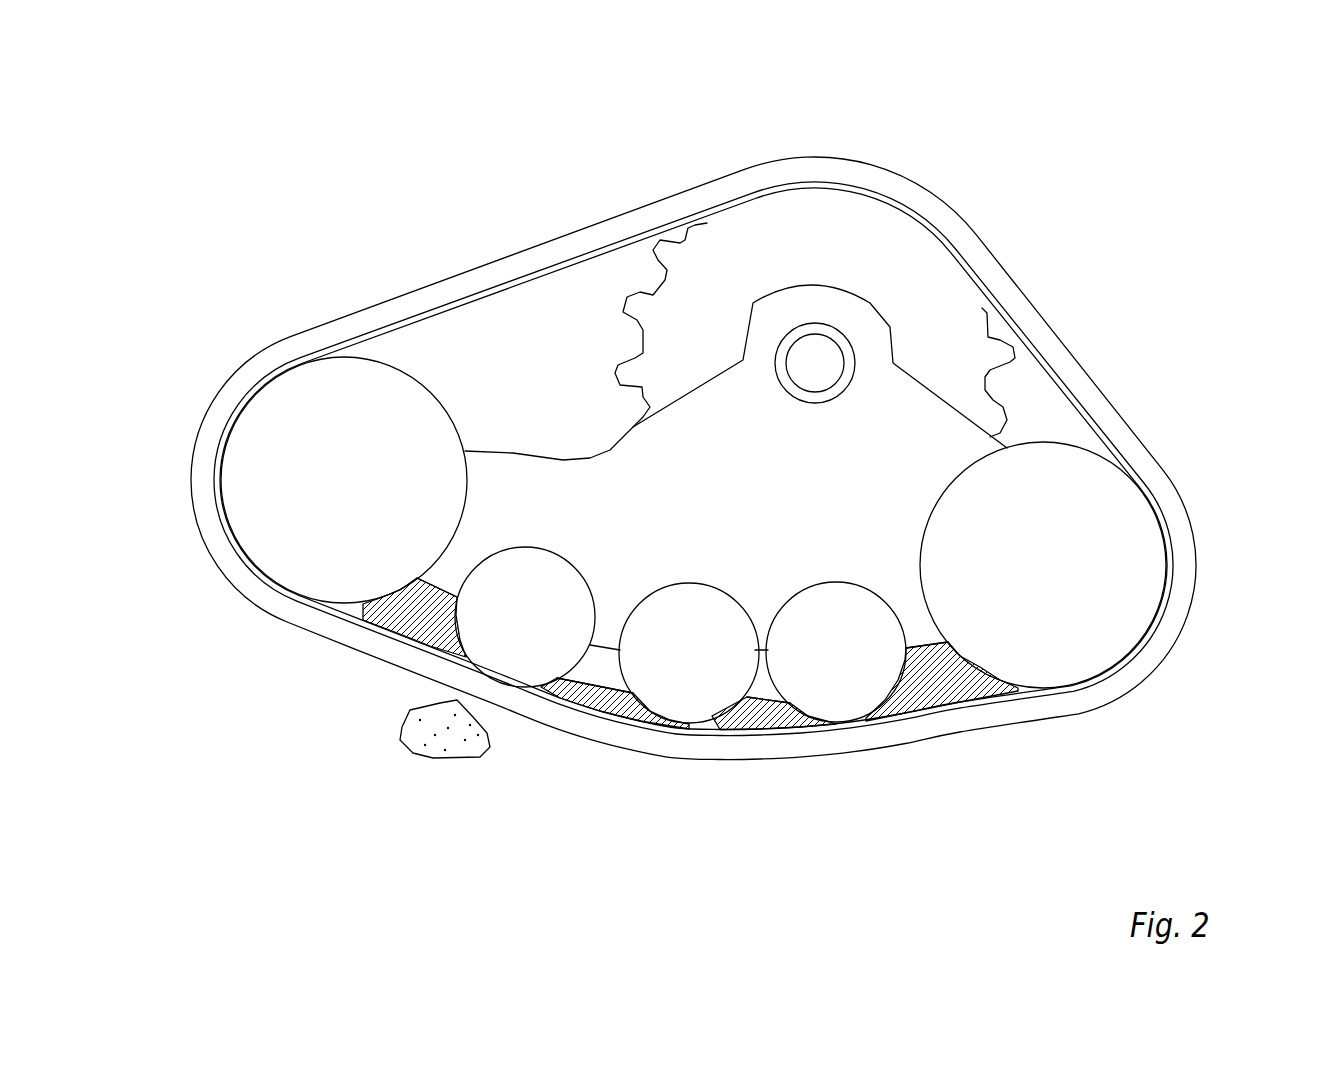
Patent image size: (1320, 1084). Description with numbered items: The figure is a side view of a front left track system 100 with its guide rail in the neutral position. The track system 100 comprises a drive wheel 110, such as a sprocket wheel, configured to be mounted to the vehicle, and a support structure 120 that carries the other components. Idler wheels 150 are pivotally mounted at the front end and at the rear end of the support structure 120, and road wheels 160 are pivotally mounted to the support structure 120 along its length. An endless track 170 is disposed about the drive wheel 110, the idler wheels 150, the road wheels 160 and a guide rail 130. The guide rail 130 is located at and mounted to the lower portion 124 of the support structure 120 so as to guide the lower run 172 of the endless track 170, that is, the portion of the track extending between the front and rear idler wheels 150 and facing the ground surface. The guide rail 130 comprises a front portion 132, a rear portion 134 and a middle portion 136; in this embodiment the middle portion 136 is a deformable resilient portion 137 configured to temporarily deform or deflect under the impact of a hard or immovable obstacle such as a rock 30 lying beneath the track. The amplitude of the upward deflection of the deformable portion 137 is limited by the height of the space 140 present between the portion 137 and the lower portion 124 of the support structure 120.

The track system 100 is at (1108, 132).
The drive wheel 110 is at (940, 287).
The support structure 120 is at (910, 413).
The lower portion 124 is at (916, 625).
The guide rail 130 is at (600, 673).
The front portion 132 is at (388, 612).
The rear portion 134 is at (968, 685).
The middle portion 136 is at (778, 710).
The deformable resilient portion 137 is at (758, 715).
The space 140 is at (913, 668).
The idler wheels 150 is at (300, 571).
The road wheels 160 is at (540, 675).
The endless track 170 is at (1168, 497).
The lower run 172 is at (853, 745).
The rock 30 is at (428, 748).